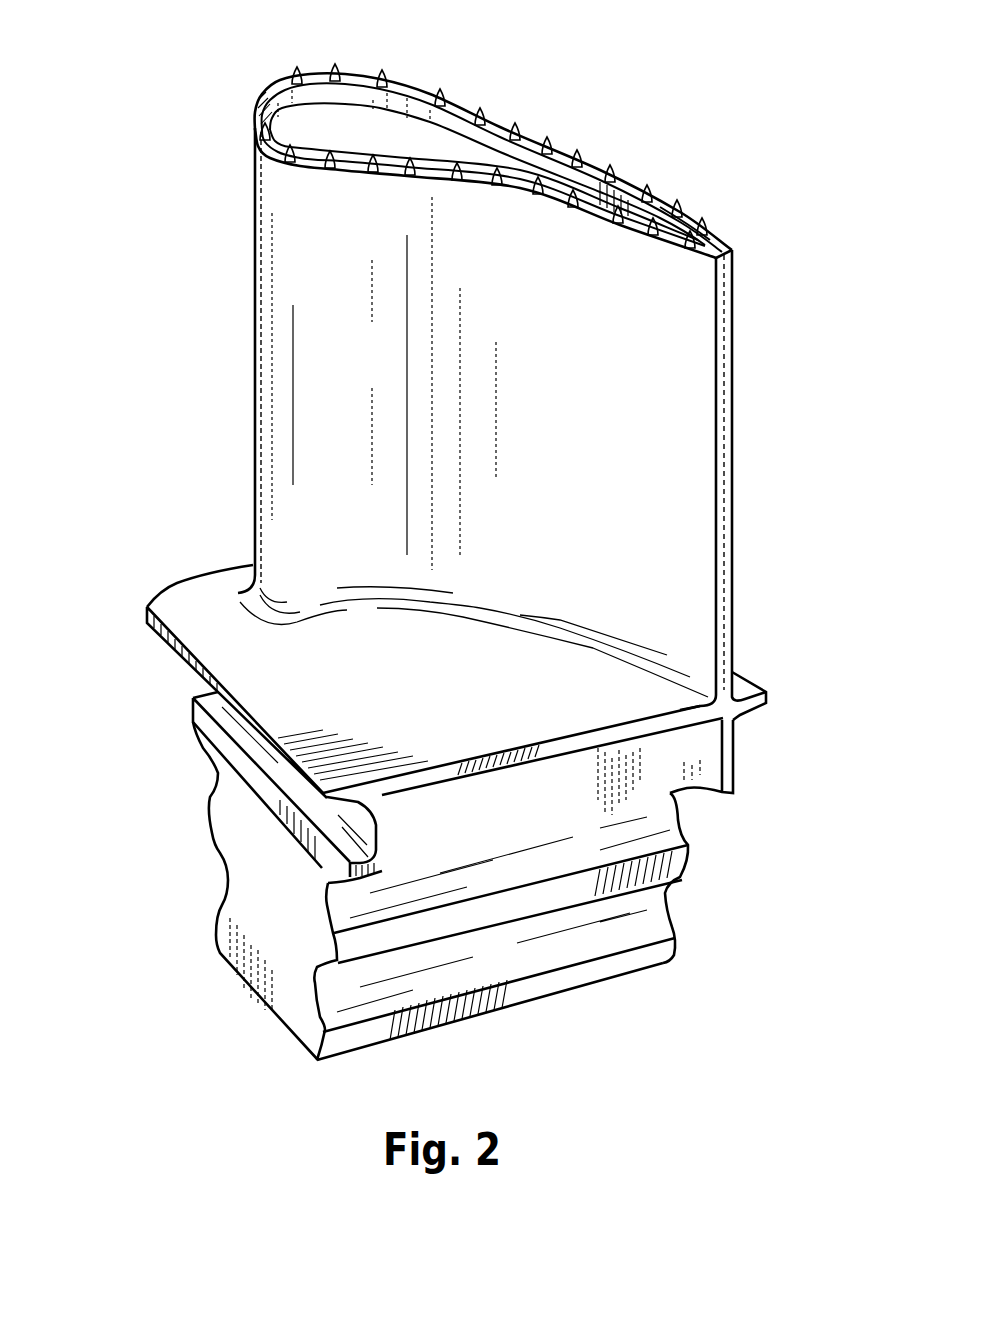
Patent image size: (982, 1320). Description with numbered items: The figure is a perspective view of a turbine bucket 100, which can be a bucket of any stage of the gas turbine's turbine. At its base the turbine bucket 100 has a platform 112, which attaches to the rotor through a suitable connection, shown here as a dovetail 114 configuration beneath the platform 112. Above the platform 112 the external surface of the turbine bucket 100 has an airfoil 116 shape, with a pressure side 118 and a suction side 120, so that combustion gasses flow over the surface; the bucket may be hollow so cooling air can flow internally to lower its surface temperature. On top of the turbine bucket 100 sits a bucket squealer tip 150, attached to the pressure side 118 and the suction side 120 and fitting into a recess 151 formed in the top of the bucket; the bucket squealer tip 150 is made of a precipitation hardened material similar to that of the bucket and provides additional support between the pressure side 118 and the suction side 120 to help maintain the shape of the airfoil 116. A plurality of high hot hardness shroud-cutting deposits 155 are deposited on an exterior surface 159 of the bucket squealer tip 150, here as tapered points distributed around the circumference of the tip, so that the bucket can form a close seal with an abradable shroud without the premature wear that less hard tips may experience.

The turbine bucket 100 is at (447, 542).
The platform 112 is at (147, 636).
The dovetail 114 is at (227, 875).
The airfoil 116 is at (256, 328).
The pressure side 118 is at (378, 366).
The suction side 120 is at (747, 470).
The bucket squealer tip 150 is at (566, 190).
The recess 151 is at (391, 128).
The high hot hardness shroud-cutting deposits 155 is at (518, 125).
The exterior surface 159 is at (687, 228).